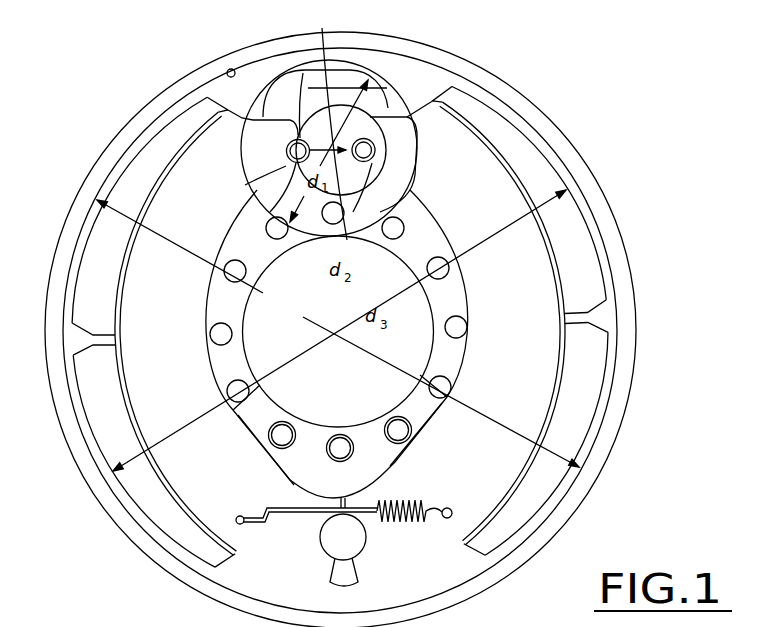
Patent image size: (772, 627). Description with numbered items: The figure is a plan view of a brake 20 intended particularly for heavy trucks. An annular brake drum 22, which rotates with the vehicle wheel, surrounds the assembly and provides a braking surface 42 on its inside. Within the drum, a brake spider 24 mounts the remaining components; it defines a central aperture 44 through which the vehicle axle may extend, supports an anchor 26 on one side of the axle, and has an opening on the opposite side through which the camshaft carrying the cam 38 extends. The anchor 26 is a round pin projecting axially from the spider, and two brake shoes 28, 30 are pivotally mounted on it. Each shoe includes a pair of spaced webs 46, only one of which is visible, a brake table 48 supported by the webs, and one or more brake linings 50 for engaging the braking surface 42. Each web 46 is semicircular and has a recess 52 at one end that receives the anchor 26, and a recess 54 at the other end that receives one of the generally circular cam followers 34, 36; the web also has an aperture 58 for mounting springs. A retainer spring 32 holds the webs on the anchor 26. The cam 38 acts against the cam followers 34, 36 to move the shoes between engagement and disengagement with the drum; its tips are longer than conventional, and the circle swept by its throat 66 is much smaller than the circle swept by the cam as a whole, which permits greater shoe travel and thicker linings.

The brake 20 is at (656, 100).
The brake drum 22 is at (494, 80).
The brake spider 24 is at (458, 357).
The anchor 26 is at (358, 535).
The brake shoe 28 is at (128, 308).
The brake shoe 30 is at (580, 246).
The retainer spring 32 is at (415, 497).
The cam follower 34 is at (290, 144).
The cam follower 36 is at (371, 148).
The cam 38 is at (345, 108).
The braking surface 42 is at (224, 68).
The central aperture 44 is at (417, 230).
The web 46 is at (90, 479).
The brake table 48 is at (87, 430).
The brake lining 50 is at (85, 369).
The recess 52 is at (322, 536).
The recess 54 is at (245, 185).
The aperture 58 is at (247, 493).
The throat 66 is at (327, 124).